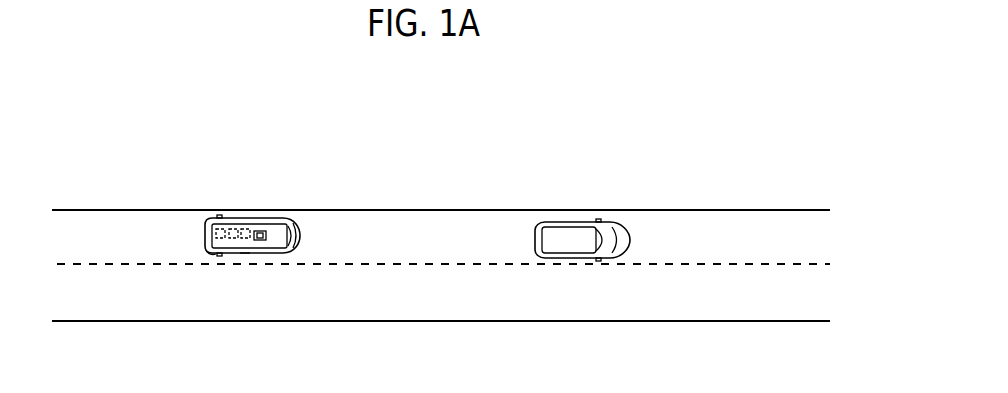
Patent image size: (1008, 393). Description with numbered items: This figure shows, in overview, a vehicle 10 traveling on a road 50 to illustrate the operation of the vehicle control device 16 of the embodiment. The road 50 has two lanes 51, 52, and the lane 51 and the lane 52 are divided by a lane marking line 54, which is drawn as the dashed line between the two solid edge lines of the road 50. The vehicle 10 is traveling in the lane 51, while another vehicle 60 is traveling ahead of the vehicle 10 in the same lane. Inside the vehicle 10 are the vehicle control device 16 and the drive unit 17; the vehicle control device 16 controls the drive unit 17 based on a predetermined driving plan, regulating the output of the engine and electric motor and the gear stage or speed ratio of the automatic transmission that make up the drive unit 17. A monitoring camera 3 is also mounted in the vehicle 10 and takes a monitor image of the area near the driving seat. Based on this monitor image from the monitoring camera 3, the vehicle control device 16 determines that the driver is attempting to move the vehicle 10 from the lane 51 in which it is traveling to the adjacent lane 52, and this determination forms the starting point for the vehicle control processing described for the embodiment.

The vehicle 10 is at (237, 218).
The monitoring camera 3 is at (262, 222).
The vehicle control device 16 is at (245, 256).
The drive unit 17 is at (212, 256).
The road 50 is at (435, 209).
The lane 51 is at (795, 250).
The lane 52 is at (795, 306).
The lane marking line 54 is at (806, 263).
The another vehicle 60 is at (566, 222).